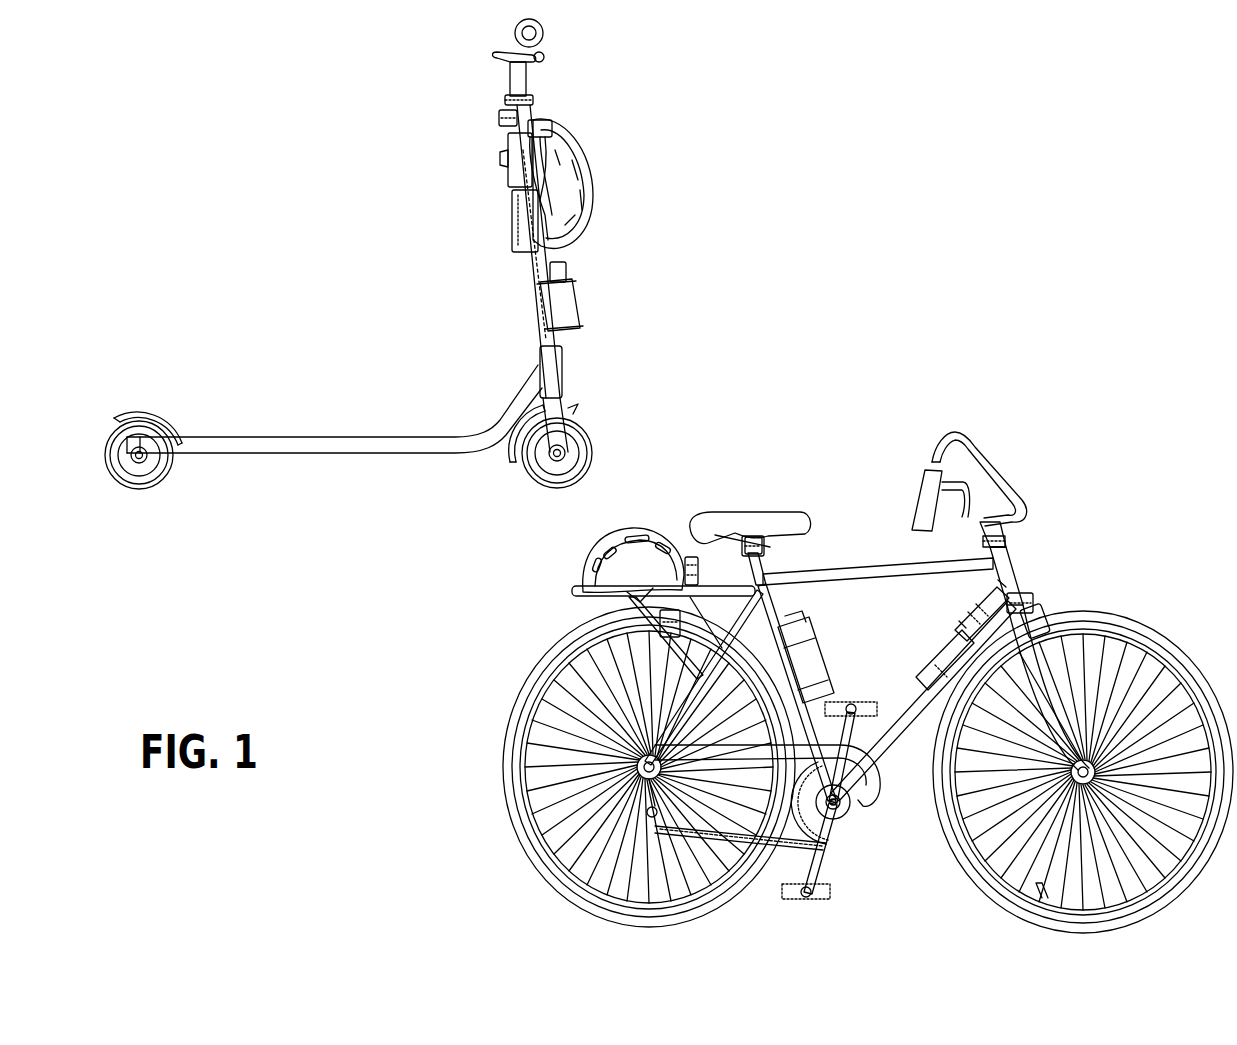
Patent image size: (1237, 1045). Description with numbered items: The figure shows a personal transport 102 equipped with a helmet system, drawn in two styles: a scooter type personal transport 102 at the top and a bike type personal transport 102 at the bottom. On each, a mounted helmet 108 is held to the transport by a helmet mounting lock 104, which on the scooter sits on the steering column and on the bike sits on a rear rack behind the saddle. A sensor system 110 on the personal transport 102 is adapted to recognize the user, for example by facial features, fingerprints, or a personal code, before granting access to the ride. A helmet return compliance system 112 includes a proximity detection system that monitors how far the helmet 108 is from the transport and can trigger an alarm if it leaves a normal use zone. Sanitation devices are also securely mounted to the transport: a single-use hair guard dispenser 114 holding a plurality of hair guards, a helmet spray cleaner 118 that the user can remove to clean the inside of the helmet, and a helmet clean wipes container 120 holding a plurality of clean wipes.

The personal transport 102 is at (343, 202).
The helmet mounting lock 104 is at (541, 130).
The mounted helmet 108 is at (570, 200).
The sensor system 110 is at (500, 118).
The helmet return compliance system 112 is at (662, 624).
The single-use hair guard dispenser 114 is at (508, 148).
The helmet spray cleaner 118 is at (582, 300).
The helmet clean wipes container 120 is at (512, 203).